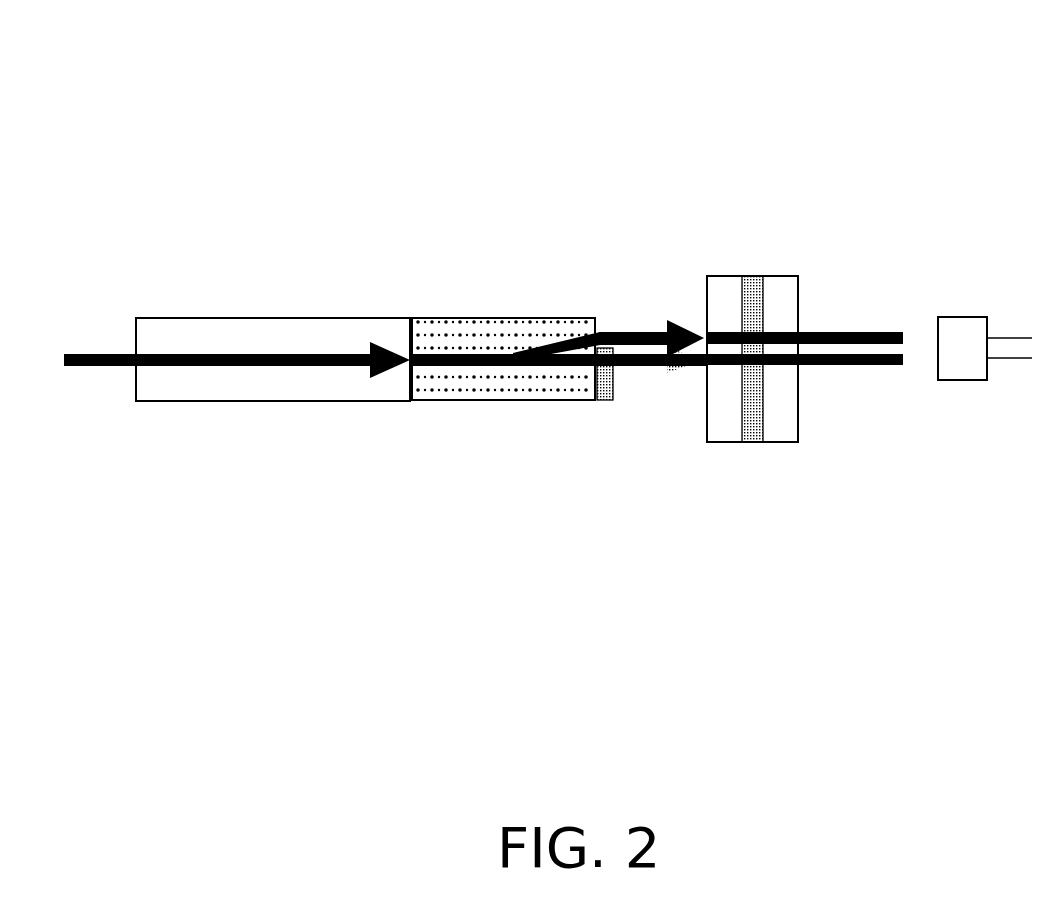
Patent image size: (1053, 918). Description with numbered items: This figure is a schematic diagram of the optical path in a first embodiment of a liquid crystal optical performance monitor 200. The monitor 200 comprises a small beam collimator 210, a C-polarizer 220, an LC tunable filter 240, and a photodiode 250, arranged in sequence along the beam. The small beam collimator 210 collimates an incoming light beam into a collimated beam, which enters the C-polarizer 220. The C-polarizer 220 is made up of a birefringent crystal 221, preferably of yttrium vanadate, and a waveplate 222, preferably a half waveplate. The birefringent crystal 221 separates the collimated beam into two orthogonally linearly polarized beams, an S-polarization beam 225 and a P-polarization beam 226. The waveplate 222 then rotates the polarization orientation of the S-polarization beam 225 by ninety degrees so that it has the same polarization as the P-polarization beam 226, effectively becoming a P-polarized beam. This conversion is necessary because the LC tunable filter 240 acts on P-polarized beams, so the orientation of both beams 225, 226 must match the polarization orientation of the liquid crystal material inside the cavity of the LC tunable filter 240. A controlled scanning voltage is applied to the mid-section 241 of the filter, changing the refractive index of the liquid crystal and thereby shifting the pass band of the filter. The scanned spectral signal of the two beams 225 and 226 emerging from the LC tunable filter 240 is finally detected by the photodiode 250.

The liquid crystal optical performance monitor 200 is at (100, 774).
The small beam collimator 210 is at (273, 437).
The C-polarizer 220 is at (554, 367).
The birefringent crystal 221 is at (460, 318).
The waveplate 222 is at (615, 402).
The S-polarization beam 225 is at (623, 270).
The P-polarization beam 226 is at (708, 238).
The LC tunable filter 240 is at (768, 353).
The mid-section of the liquid crystal tunable filter 241 is at (748, 276).
The photodiode 250 is at (985, 434).